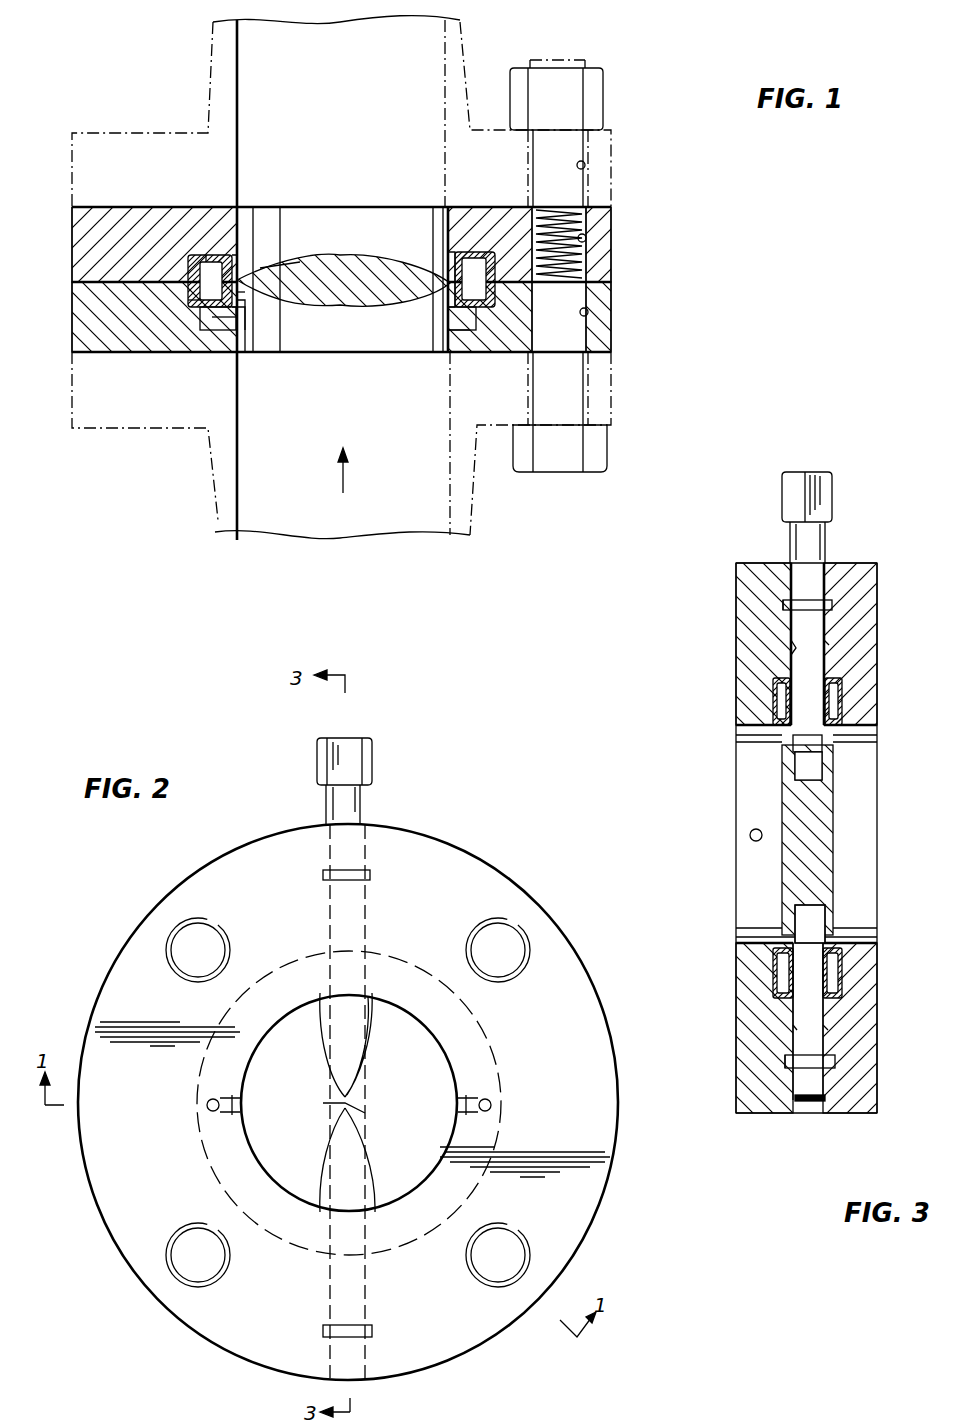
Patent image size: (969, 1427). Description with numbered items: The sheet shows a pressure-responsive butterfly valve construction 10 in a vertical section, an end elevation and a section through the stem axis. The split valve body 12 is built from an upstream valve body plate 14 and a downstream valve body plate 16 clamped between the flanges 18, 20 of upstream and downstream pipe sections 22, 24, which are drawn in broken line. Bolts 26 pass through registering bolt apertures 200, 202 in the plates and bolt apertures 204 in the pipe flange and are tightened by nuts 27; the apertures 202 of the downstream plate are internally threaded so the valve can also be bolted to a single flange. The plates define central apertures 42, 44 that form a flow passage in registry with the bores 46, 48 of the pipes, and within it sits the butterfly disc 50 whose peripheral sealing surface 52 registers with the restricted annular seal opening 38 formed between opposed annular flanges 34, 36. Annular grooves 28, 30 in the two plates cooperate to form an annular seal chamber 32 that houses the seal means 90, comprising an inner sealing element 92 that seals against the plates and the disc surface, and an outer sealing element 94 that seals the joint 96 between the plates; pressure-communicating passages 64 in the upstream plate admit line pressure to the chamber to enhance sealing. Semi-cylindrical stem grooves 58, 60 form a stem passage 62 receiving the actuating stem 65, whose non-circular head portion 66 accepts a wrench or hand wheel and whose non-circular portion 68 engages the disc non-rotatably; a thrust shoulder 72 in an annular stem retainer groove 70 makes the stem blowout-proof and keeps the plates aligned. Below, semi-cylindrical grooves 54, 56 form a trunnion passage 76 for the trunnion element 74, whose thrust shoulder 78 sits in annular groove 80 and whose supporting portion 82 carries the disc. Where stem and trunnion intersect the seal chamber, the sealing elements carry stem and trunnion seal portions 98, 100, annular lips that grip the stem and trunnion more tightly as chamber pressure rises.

In FIG. 1, the valve construction 10 is at (708, 220).
In FIG. 2, the valve construction 10 is at (446, 806).
In FIG. 1, the split valve body 12 is at (614, 295).
In FIG. 2, the split valve body 12 is at (503, 866).
In FIG. 1, the upstream valve body plate 14 is at (600, 340).
In FIG. 3, the upstream valve body plate 14 is at (745, 575).
In FIG. 1, the downstream valve body plate 16 is at (598, 262).
In FIG. 3, the downstream valve body plate 16 is at (866, 578).
In FIG. 1, the flange 18 is at (612, 405).
In FIG. 1, the flange 20 is at (610, 175).
In FIG. 1, the upstream pipe section 22 is at (220, 527).
In FIG. 1, the downstream pipe section 24 is at (214, 47).
In FIG. 1, the bolt 26 is at (600, 455).
In FIG. 1, the nut 27 is at (604, 80).
In FIG. 1, the annular groove 28 is at (208, 307).
In FIG. 1, the annular groove 30 is at (205, 262).
In FIG. 1, the annular seal chamber 32 is at (480, 256).
In FIG. 3, the annular seal chamber 32 is at (834, 700).
In FIG. 1, the annular flange 34 is at (242, 307).
In FIG. 1, the annular flange 36 is at (235, 262).
In FIG. 1, the annular seal opening 38 is at (283, 268).
In FIG. 1, the aperture 42 is at (379, 352).
In FIG. 1, the aperture 44 is at (411, 208).
In FIG. 1, the bore 46 is at (447, 512).
In FIG. 1, the bore 48 is at (445, 78).
In FIG. 1, the butterfly disc 50 is at (338, 262).
In FIG. 2, the butterfly disc 50 is at (412, 1040).
In FIG. 3, the butterfly disc 50 is at (823, 855).
In FIG. 1, the annular peripheral sealing surface 52 is at (455, 305).
In FIG. 3, the semi-cylindrical groove 54 is at (828, 1032).
In FIG. 3, the semi-cylindrical groove 56 is at (793, 1030).
In FIG. 1, the semi-cylindrical stem groove 58 is at (448, 276).
In FIG. 3, the semi-cylindrical stem groove 58 is at (827, 647).
In FIG. 3, the semi-cylindrical stem groove 60 is at (795, 650).
In FIG. 1, the stem passage 62 is at (250, 332).
In FIG. 2, the stem passage 62 is at (210, 1108).
In FIG. 3, the stem passage 62 is at (812, 668).
In FIG. 1, the pressure-communicating passage 64 is at (465, 312).
In FIG. 2, the pressure-communicating passage 64 is at (490, 1103).
In FIG. 3, the valve disc actuating stem 65 is at (826, 540).
In FIG. 3, the non-circular head portion 66 is at (805, 472).
In FIG. 3, the non-circular portion 68 is at (800, 745).
In FIG. 3, the annular stem retainer groove 70 is at (783, 604).
In FIG. 3, the thrust shoulder 72 is at (834, 604).
In FIG. 2, the trunnion element 74 is at (332, 1348).
In FIG. 3, the trunnion element 74 is at (812, 1102).
In FIG. 3, the trunnion passage 76 is at (820, 1010).
In FIG. 3, the thrust shoulder 78 is at (788, 1062).
In FIG. 3, the annular groove 80 is at (832, 1062).
In FIG. 3, the supporting portion 82 is at (818, 928).
In FIG. 1, the seal means 90 is at (208, 262).
In FIG. 1, the inner sealing element 92 is at (247, 302).
In FIG. 1, the outer sealing element 94 is at (192, 320).
In FIG. 1, the joint 96 is at (82, 276).
In FIG. 3, the stem and trunnion seal portion 98 is at (776, 706).
In FIG. 3, the stem and trunnion seal portion 100 is at (776, 697).
In FIG. 1, the bolt aperture 200 is at (588, 312).
In FIG. 2, the bolt aperture 200 is at (514, 1253).
In FIG. 1, the bolt aperture 202 is at (586, 238).
In FIG. 1, the bolt aperture 204 is at (585, 163).